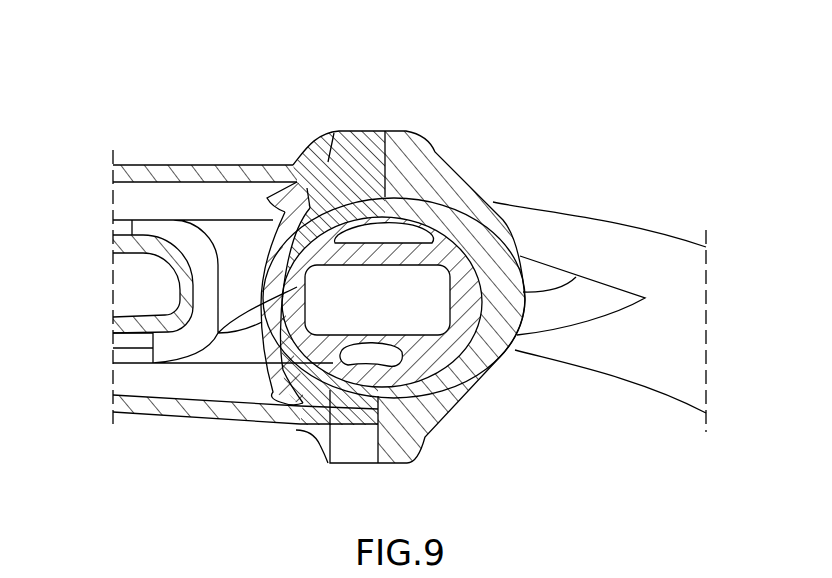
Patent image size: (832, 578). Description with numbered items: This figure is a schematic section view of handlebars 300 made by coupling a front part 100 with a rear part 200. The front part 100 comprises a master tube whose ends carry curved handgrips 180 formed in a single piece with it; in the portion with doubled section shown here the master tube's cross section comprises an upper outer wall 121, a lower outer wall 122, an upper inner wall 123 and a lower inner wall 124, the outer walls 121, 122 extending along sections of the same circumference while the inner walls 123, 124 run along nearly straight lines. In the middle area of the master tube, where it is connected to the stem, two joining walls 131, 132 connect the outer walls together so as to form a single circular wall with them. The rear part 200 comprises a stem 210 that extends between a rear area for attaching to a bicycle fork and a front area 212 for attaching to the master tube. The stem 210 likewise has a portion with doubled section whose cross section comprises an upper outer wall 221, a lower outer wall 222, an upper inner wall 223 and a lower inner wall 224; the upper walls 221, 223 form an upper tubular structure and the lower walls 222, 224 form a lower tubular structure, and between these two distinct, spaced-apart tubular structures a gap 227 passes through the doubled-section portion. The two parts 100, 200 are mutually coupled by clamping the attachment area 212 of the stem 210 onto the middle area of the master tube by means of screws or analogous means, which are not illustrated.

The front part of handlebars 100 is at (716, 159).
The upper outer wall 121 is at (394, 210).
The lower outer wall 122 is at (329, 368).
The upper inner wall 123 is at (402, 258).
The lower inner wall 124 is at (405, 367).
The joining wall 131 is at (468, 291).
The joining wall 132 is at (293, 303).
The handgrip 180 is at (643, 357).
The rear part of handlebars 200 is at (192, 75).
The stem 210 is at (203, 152).
The front area 212 is at (325, 436).
The upper outer wall 221 is at (145, 165).
The lower outer wall 222 is at (143, 407).
The upper inner wall 223 is at (123, 245).
The lower inner wall 224 is at (117, 323).
The gap 227 is at (140, 290).
The handlebars 300 is at (583, 72).